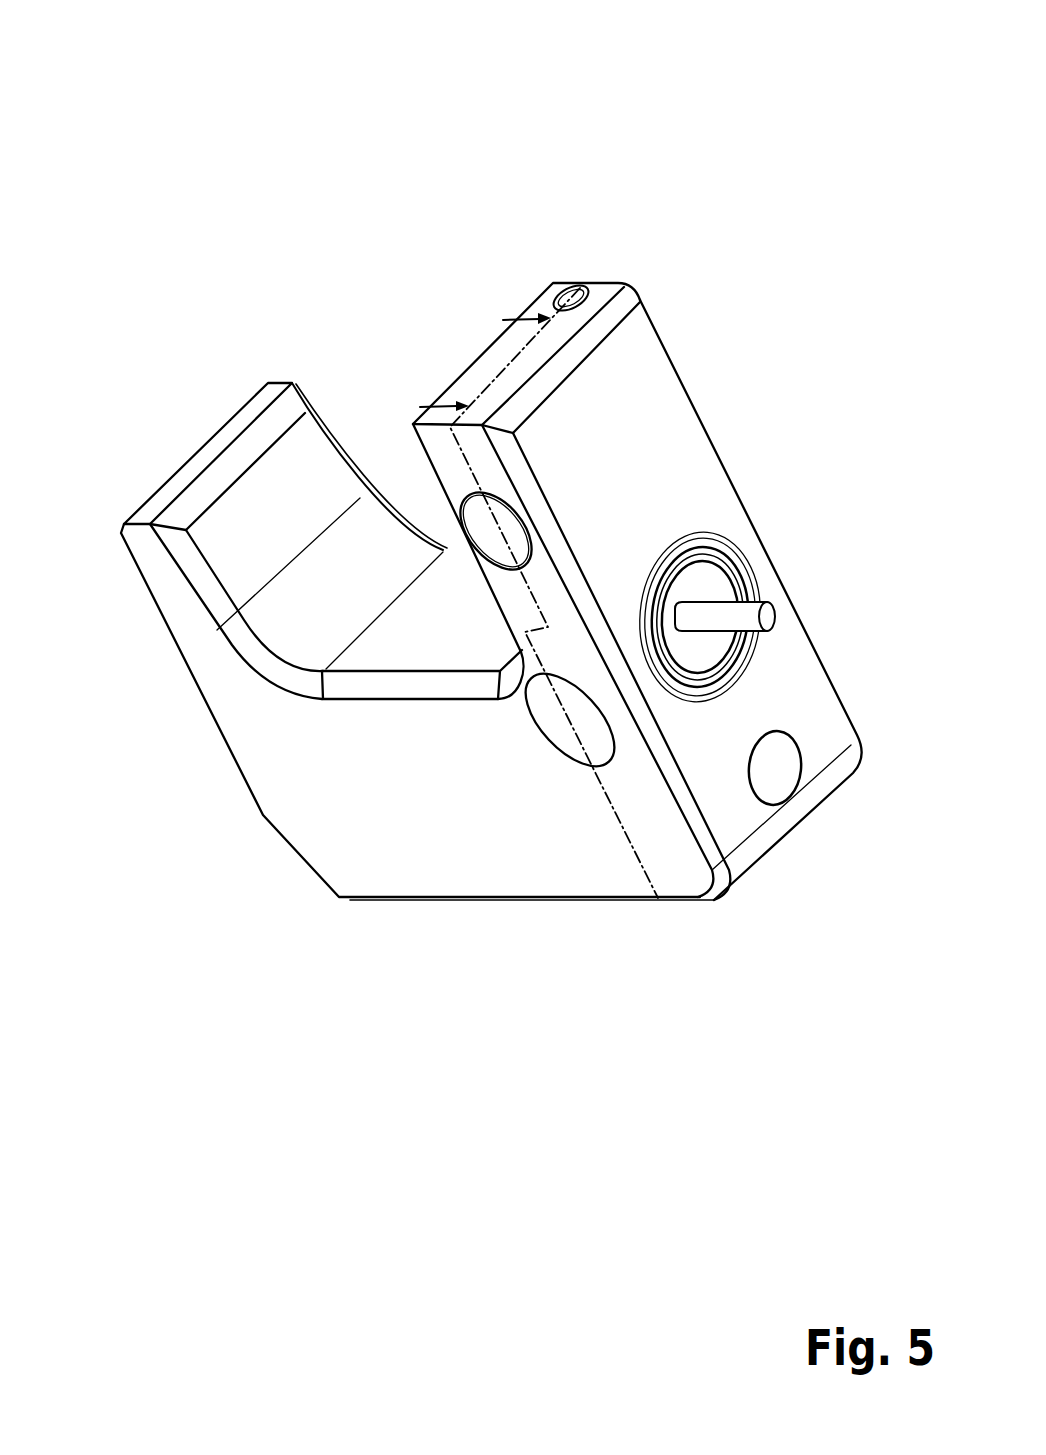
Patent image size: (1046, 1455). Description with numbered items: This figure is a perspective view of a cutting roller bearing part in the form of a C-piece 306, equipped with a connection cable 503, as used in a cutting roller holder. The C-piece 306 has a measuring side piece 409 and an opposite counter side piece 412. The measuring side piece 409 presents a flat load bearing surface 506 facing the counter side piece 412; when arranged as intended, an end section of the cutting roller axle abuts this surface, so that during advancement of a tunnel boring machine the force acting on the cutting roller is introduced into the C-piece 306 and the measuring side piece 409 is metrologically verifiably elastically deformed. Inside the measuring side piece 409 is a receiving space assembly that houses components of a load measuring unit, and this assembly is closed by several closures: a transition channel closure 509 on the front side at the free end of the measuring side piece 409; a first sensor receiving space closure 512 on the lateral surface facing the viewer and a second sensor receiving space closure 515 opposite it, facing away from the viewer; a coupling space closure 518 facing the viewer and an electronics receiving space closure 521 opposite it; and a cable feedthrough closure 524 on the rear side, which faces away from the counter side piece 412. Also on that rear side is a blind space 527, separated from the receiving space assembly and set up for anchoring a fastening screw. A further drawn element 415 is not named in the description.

The C-piece 306 is at (488, 210).
The measuring side piece 409 is at (613, 390).
The counter side piece 412 is at (267, 512).
The base 415 is at (467, 805).
The connection cable 503 is at (717, 618).
The load bearing surface 506 is at (476, 350).
The transition channel closure 509 is at (574, 296).
The first sensor receiving space closure 512 is at (487, 533).
The second sensor receiving space closure 515 is at (711, 406).
The coupling space closure 518 is at (552, 725).
The electronics receiving space closure 521 is at (810, 587).
The cable feedthrough closure 524 is at (692, 645).
The blind space 527 is at (773, 775).